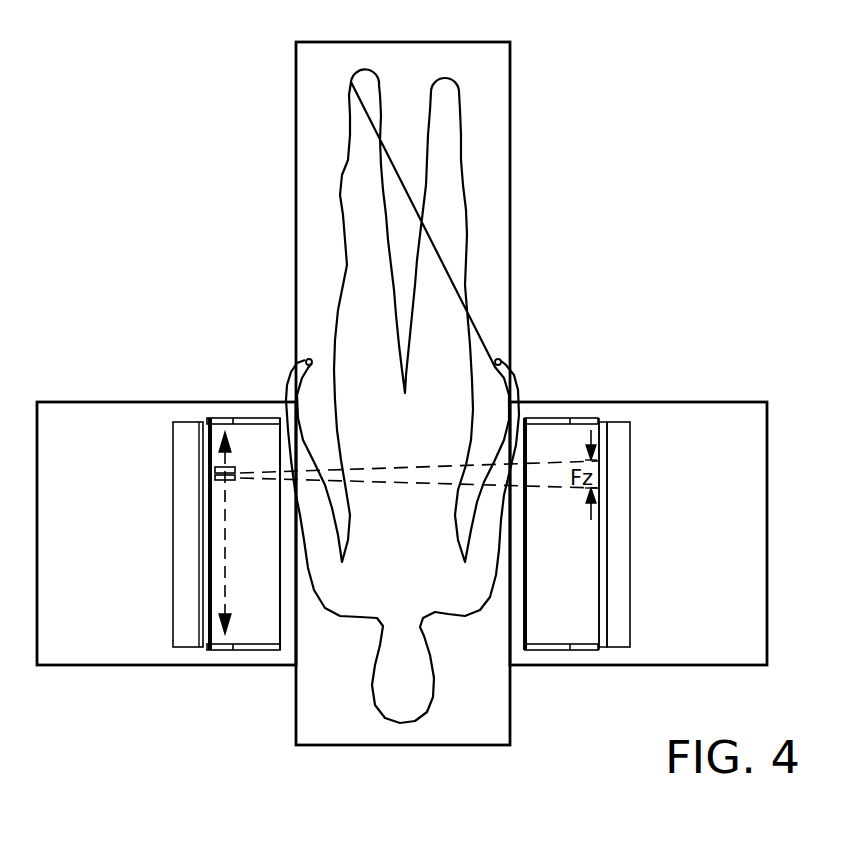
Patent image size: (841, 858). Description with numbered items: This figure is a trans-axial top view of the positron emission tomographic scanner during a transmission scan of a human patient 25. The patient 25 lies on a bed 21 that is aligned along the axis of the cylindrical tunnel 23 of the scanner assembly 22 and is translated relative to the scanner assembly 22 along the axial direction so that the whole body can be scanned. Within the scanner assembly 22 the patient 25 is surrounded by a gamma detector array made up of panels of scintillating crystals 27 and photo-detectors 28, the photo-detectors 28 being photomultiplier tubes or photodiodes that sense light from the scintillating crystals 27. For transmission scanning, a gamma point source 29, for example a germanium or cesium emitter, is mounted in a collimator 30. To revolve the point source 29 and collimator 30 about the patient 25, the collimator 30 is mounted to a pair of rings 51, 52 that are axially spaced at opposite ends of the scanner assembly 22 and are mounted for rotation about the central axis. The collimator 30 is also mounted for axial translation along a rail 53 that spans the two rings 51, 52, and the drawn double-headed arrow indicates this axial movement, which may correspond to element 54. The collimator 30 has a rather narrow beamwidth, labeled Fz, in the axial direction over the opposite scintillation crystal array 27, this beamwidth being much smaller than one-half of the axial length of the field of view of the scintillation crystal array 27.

The bed 21 is at (301, 278).
The scanner assembly 22 is at (702, 391).
The tunnel 23 is at (523, 622).
The human patient 25 is at (358, 608).
The scintillating crystals 27 is at (608, 538).
The photo-detectors 28 is at (620, 575).
The gamma point source 29 is at (216, 470).
The collimator 30 is at (232, 481).
The ring 51 is at (221, 418).
The ring 52 is at (222, 650).
The rail 53 is at (210, 548).
The displacement direction 54 is at (210, 578).